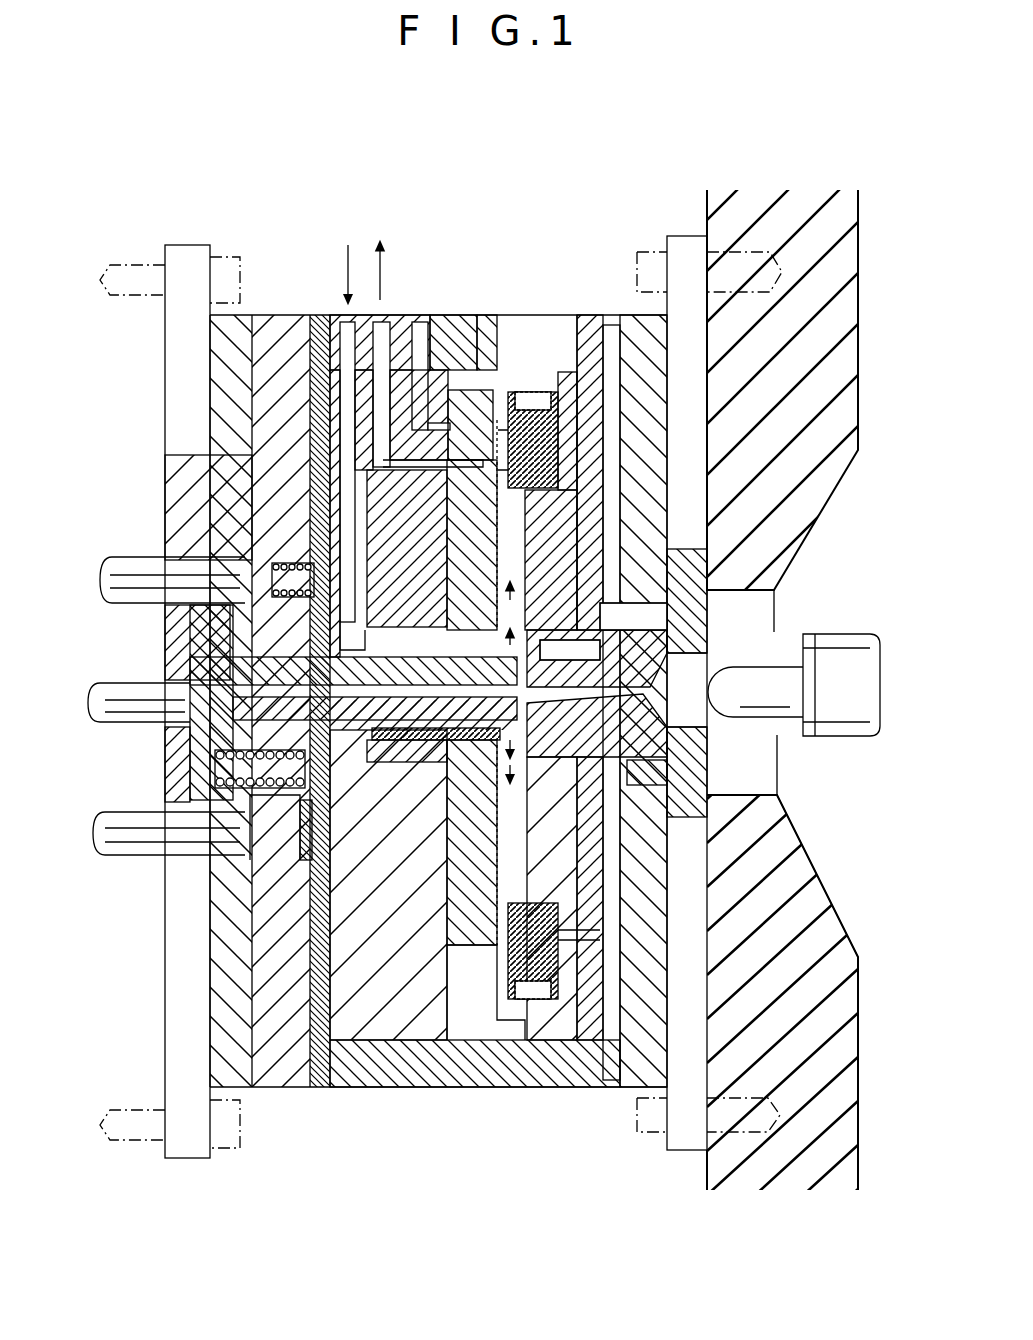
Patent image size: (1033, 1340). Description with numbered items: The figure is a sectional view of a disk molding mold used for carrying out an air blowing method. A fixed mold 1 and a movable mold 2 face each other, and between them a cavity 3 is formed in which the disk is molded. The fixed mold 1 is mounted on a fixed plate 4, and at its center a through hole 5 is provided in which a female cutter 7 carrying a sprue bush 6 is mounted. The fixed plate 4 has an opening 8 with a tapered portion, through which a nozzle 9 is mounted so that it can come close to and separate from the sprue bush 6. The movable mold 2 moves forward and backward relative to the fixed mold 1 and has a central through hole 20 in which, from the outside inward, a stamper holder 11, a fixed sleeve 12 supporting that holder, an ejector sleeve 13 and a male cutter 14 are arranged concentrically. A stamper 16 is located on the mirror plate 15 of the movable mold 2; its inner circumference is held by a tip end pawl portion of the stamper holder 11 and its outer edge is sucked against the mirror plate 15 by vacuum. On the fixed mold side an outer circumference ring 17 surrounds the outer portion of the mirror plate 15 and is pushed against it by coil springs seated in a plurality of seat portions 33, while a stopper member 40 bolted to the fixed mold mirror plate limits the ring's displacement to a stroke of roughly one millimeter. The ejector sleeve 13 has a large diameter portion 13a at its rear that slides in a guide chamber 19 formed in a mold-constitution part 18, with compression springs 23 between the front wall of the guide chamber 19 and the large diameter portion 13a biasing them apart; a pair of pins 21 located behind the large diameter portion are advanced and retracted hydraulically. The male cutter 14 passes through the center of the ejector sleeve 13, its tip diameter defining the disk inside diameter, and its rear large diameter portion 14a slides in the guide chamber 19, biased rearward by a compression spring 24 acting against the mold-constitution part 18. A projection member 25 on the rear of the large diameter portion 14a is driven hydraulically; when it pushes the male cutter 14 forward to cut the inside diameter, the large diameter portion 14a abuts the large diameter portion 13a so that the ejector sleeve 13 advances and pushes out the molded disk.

The fixed mold 1 is at (703, 1168).
The movable mold 2 is at (162, 1173).
The cavity 3 is at (512, 828).
The fixed plate 4 is at (792, 225).
The through hole 5 is at (592, 762).
The sprue bush 6 is at (690, 727).
The female cutter 7 is at (568, 753).
The opening 8 is at (735, 795).
The nozzle 9 is at (782, 700).
The stamper holder 11 is at (452, 752).
The fixed sleeve 12 is at (392, 822).
The ejector sleeve 13 is at (402, 760).
The large diameter portion 13a is at (280, 878).
The male cutter 14 is at (533, 559).
The large diameter portion 14a is at (205, 757).
The mirror plate 15 is at (453, 898).
The stamper 16 is at (475, 395).
The outer circumference ring 17 is at (512, 428).
The mold-constitution part 18 is at (318, 312).
The guide chamber 19 is at (228, 615).
The through hole 20 is at (385, 640).
The pins 21 is at (130, 565).
The compression springs 23 is at (295, 560).
The compression spring 24 is at (215, 775).
The projection member 25 is at (105, 685).
The seat portion 33 is at (590, 420).
The stopper member 40 is at (548, 398).